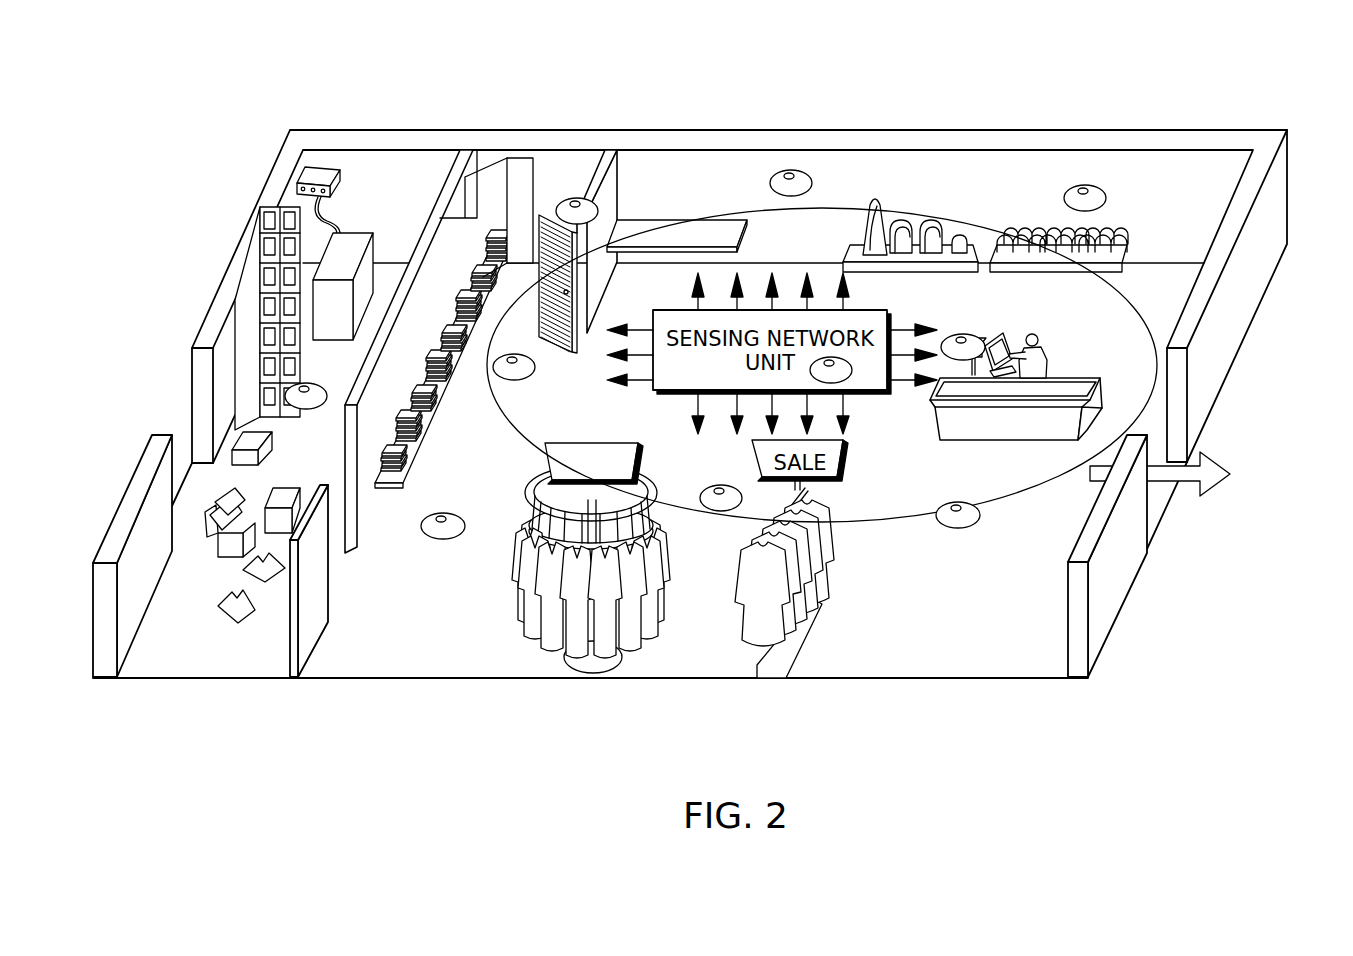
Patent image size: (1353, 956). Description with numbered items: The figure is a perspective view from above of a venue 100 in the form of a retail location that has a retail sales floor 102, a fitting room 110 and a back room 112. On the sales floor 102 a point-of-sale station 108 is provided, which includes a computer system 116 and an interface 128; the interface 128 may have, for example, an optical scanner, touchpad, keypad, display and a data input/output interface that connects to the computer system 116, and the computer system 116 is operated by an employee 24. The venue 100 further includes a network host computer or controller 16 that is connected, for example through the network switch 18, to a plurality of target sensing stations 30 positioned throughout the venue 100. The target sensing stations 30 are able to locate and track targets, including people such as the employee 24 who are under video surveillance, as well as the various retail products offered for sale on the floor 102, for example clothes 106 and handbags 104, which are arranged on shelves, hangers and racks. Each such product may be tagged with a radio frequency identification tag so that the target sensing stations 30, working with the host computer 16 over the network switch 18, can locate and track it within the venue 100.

The venue 100 is at (226, 113).
The retail sales floor 102 is at (998, 677).
The handbags 104 is at (980, 203).
The clothes 106 is at (491, 643).
The point-of-sale station 108 is at (1066, 360).
The fitting room 110 is at (558, 162).
The back room 112 is at (204, 680).
The computer system 116 is at (998, 334).
The interface 128 is at (978, 337).
The network host computer or controller 16 is at (356, 247).
The network switch 18 is at (339, 180).
The employee 24 is at (1034, 334).
The target sensing stations 30 is at (597, 200).